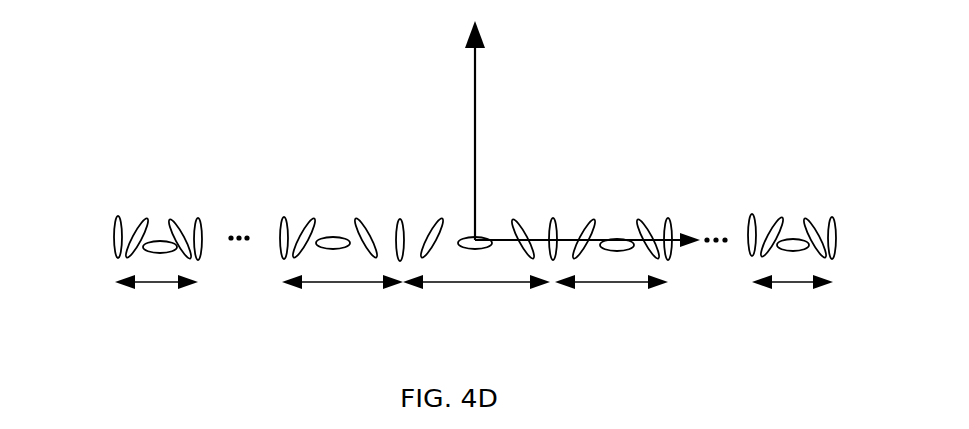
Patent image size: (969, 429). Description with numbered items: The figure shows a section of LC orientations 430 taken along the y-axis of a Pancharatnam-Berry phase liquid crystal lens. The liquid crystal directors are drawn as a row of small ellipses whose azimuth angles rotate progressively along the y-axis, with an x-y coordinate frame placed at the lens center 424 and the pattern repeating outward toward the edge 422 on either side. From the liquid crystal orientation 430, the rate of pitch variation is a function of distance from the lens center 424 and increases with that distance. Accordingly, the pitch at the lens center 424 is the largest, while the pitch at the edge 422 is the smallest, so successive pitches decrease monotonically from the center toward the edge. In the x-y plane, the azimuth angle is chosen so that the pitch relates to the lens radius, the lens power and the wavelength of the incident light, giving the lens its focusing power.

The LC orientations 430 is at (122, 48).
The edge 422 is at (867, 197).
The lens center 424 is at (475, 238).